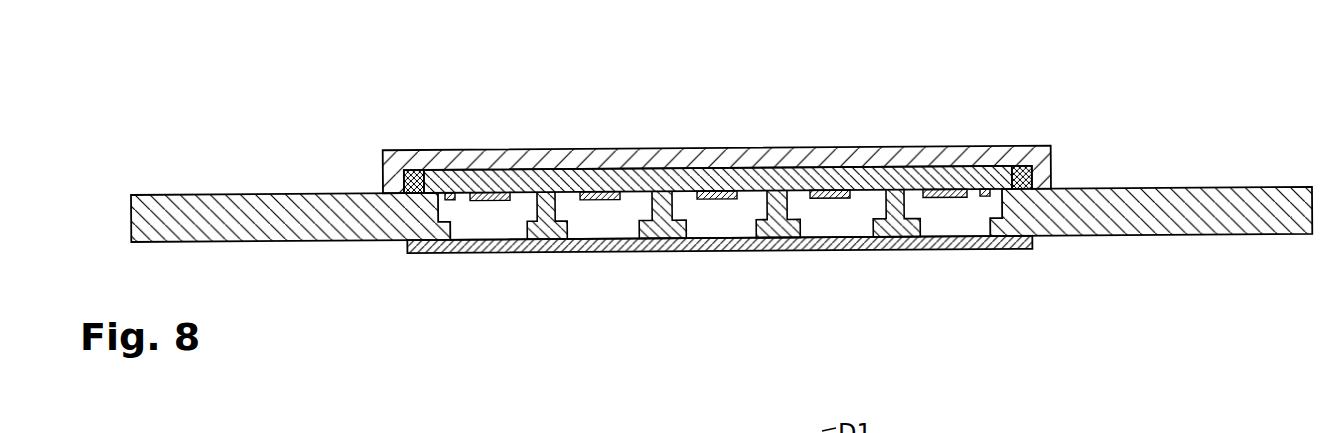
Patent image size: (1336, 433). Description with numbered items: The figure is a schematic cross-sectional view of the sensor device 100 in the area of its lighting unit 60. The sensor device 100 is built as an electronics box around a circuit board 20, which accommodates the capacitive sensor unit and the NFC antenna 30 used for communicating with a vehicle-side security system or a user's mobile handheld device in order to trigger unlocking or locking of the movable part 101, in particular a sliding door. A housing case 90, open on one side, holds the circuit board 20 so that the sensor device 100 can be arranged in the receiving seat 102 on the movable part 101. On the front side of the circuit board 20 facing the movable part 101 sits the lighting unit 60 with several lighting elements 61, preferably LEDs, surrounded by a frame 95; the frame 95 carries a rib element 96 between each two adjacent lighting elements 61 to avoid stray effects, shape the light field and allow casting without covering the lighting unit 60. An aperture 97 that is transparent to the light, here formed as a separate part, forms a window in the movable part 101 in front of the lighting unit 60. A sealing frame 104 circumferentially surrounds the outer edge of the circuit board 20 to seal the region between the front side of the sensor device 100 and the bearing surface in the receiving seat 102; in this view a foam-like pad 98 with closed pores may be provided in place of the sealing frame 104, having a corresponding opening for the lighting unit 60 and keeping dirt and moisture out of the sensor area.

The sensor device 100 is at (258, 113).
The housing case 90 is at (563, 160).
The circuit board 20 is at (808, 183).
The sealing frame 104 is at (418, 187).
The pad 98 is at (1020, 189).
The NFC antenna 30 is at (452, 197).
The lighting elements 61 is at (587, 201).
The lighting unit 60 is at (966, 272).
The movable part 101 is at (1133, 224).
The receiving seat 102 is at (962, 220).
The rib element 96 is at (653, 236).
The frame 95 is at (427, 235).
The aperture 97 is at (708, 247).